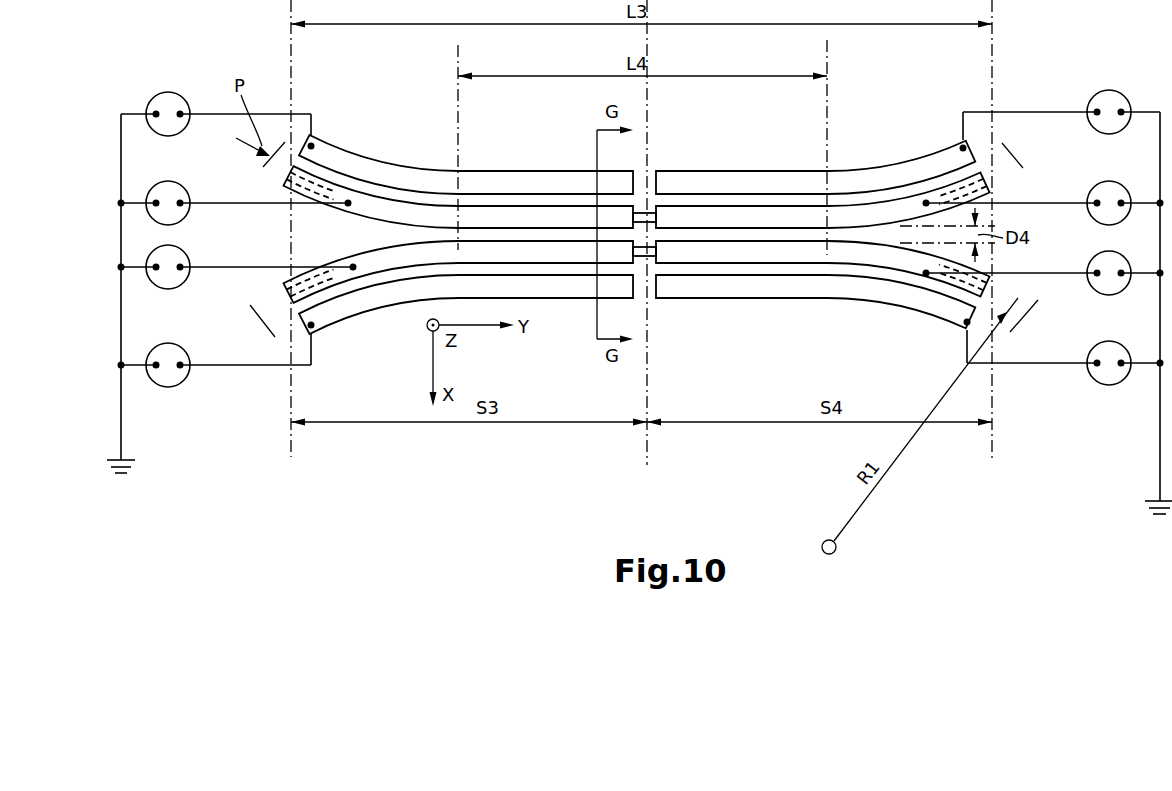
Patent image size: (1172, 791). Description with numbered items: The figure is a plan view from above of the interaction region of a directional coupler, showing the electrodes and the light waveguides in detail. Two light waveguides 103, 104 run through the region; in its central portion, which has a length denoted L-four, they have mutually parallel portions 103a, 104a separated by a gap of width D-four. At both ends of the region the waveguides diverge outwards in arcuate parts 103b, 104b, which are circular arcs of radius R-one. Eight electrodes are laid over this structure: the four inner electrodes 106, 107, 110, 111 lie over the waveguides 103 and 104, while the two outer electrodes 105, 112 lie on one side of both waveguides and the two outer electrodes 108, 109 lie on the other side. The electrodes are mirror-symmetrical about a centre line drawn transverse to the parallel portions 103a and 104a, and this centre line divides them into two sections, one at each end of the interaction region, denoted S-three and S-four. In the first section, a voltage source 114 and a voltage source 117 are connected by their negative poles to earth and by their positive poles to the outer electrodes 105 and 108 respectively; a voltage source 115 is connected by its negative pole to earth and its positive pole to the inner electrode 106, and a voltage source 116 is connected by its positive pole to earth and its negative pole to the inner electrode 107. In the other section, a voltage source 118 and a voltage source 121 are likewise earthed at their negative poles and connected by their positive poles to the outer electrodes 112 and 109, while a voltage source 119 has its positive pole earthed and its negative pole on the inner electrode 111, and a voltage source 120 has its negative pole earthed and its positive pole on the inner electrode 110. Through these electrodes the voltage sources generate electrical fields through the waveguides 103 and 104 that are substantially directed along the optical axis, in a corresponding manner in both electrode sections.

The light waveguide 103 is at (276, 177).
The parallel portion of light waveguide 103a is at (645, 212).
The arcuate part of light waveguide 103b is at (958, 145).
The light waveguide 104 is at (260, 298).
The parallel portion of light waveguide 104a is at (648, 257).
The arcuate part of light waveguide 104b is at (953, 300).
The outer electrode 105 is at (330, 150).
The inner electrode 106 is at (366, 187).
The inner electrode 107 is at (347, 312).
The outer electrode 108 is at (378, 300).
The outer electrode 109 is at (865, 290).
The inner electrode 110 is at (910, 263).
The inner electrode 111 is at (898, 203).
The outer electrode 112 is at (850, 183).
The voltage source 114 is at (160, 98).
The voltage source 115 is at (160, 186).
The voltage source 116 is at (178, 252).
The voltage source 117 is at (178, 382).
The voltage source 118 is at (1118, 100).
The voltage source 119 is at (1118, 190).
The voltage source 120 is at (1132, 247).
The voltage source 121 is at (1132, 337).